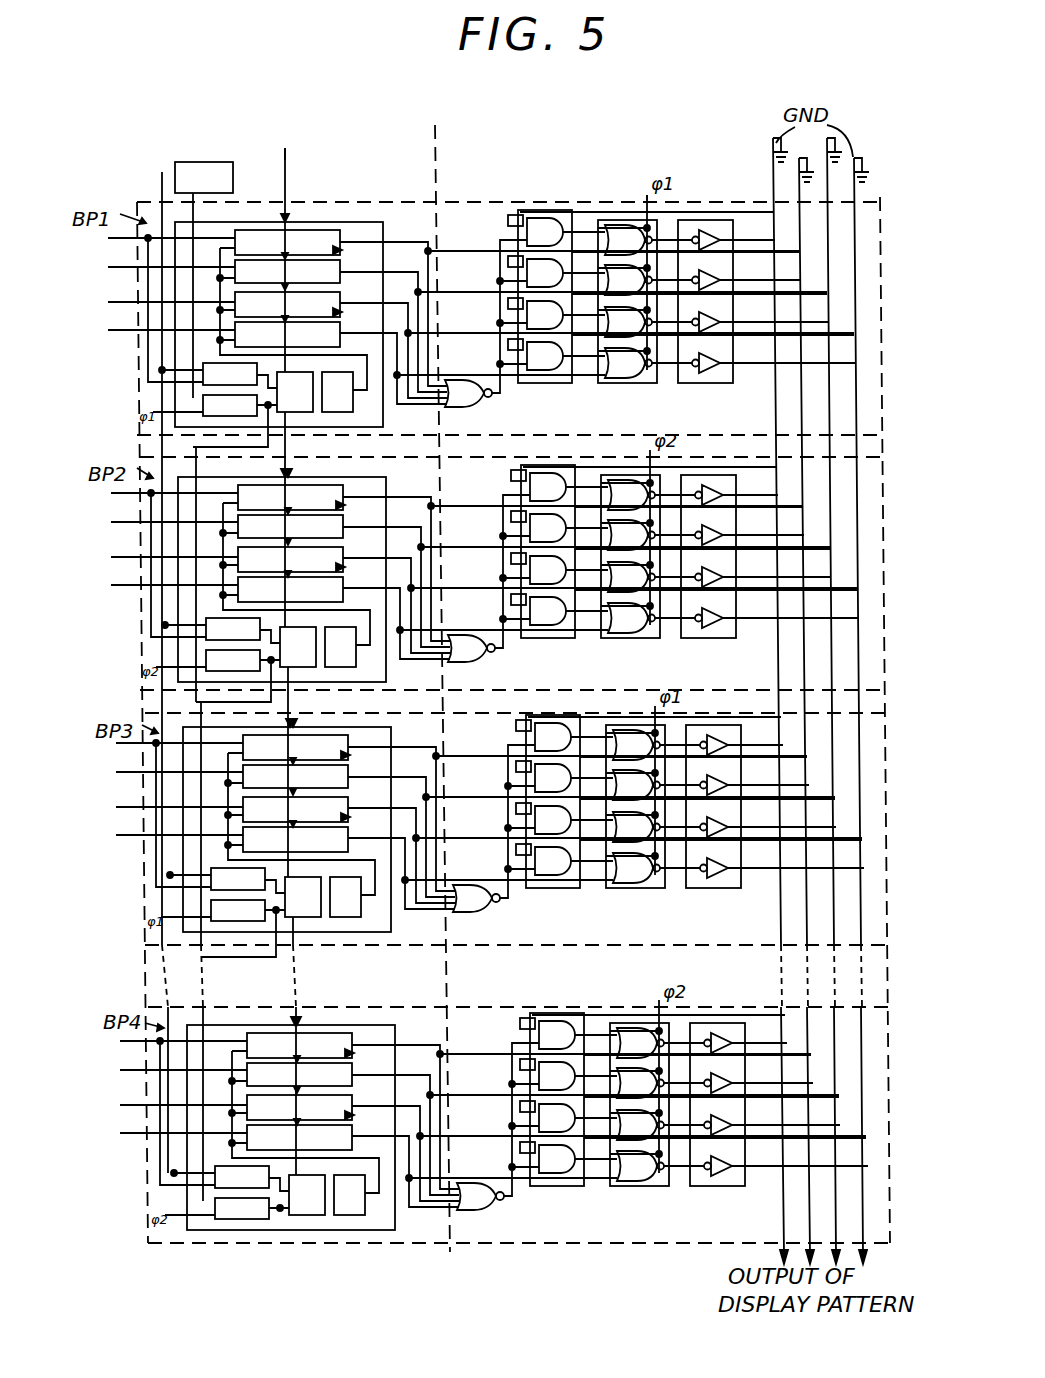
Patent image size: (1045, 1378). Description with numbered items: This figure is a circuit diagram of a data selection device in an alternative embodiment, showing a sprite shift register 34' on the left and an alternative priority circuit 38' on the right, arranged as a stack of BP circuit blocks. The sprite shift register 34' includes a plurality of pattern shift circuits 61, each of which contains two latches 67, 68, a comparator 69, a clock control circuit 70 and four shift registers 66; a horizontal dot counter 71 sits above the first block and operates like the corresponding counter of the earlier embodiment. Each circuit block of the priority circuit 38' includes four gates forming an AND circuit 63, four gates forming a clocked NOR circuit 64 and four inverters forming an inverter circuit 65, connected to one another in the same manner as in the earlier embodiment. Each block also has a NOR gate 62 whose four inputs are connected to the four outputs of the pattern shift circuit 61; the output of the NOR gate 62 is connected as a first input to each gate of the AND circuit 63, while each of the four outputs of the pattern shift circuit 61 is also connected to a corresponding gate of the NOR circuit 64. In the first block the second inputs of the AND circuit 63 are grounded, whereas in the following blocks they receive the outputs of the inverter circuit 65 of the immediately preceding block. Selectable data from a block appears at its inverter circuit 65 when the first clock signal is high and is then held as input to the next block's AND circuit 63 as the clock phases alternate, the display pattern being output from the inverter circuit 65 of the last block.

The sprite shift register 34' is at (265, 117).
The priority circuit 38' is at (616, 146).
The pattern shift circuit 61 is at (305, 722).
The NOR gate 62 is at (480, 805).
The AND circuit 63 is at (546, 718).
The clocked NOR circuit 64 is at (633, 726).
The inverter circuit 65 is at (711, 722).
The shift register 66 is at (312, 690).
The latch 67 is at (236, 775).
The latch 68 is at (236, 807).
The comparator 69 is at (301, 793).
The clock control circuit 70 is at (343, 793).
The horizontal dot counter 71 is at (196, 187).